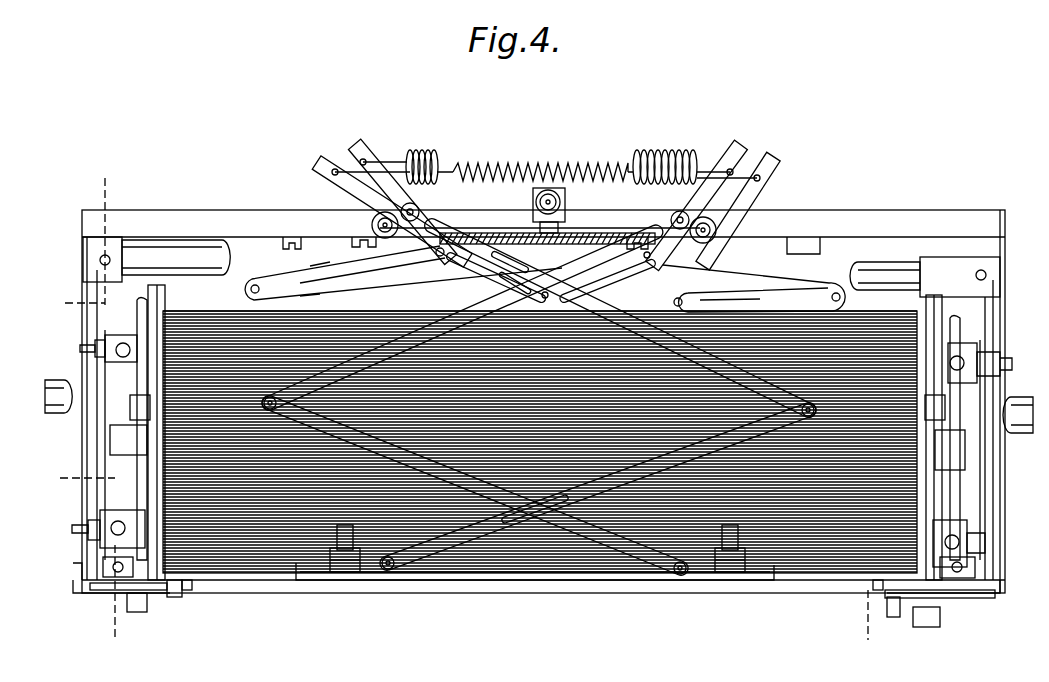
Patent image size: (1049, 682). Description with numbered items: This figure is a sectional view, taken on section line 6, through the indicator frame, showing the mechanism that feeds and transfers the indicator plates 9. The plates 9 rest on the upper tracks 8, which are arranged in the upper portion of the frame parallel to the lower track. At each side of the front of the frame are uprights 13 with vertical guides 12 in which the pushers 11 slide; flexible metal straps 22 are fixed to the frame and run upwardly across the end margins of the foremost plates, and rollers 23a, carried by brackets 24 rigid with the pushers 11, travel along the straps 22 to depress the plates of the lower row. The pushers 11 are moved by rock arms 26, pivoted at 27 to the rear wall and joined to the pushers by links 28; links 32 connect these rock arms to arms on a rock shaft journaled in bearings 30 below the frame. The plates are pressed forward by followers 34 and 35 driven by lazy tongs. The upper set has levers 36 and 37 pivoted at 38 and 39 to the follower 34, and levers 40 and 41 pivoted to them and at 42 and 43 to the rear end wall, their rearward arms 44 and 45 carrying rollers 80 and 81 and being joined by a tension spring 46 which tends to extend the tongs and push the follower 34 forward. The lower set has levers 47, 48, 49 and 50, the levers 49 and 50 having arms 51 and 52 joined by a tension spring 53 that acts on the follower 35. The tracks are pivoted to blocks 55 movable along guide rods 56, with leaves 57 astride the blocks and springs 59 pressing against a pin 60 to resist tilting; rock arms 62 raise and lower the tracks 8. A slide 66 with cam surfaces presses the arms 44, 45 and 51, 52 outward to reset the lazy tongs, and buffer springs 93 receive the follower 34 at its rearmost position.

The section line 6 is at (130, 633).
The upper tracks 8 is at (885, 632).
The indicator plates 9 is at (232, 570).
The pushers 11 is at (975, 600).
The vertical grooves or guides 12 is at (995, 594).
The uprights 13 is at (80, 590).
The flexible metal straps or tapes 22 is at (860, 596).
The rollers 23a is at (895, 605).
The brackets 24 is at (940, 617).
The rock arms 26 is at (993, 487).
The pivot 27 is at (882, 268).
The links 28 is at (975, 572).
The bearings 30 is at (970, 455).
The links 32 is at (1003, 425).
The follower 34 is at (462, 582).
The follower 35 is at (312, 312).
The lever 36 is at (618, 480).
The lever 37 is at (376, 463).
The pivot 38 is at (385, 575).
The pivot 39 is at (690, 580).
The lever 40 is at (676, 357).
The lever 41 is at (404, 335).
The pivot 42 is at (445, 245).
The pivot 43 is at (660, 268).
The arm 44 is at (358, 150).
The arm 45 is at (733, 158).
The tension spring 46 is at (668, 150).
The lever 47 is at (746, 302).
The lever 48 is at (368, 297).
The lever 49 is at (722, 280).
The lever 50 is at (330, 268).
The arm 51 is at (340, 178).
The arm 52 is at (750, 192).
The tension spring 53 is at (600, 168).
The carriers or blocks 55 is at (985, 545).
The guide rods 56 is at (967, 532).
The leaves 57 is at (965, 520).
The springs 59 is at (88, 518).
The pin 60 is at (108, 515).
The rock arms 62 is at (945, 408).
The slide 66 is at (110, 520).
The roller 80 is at (412, 204).
The roller 81 is at (674, 215).
The buffer springs 93 is at (492, 287).